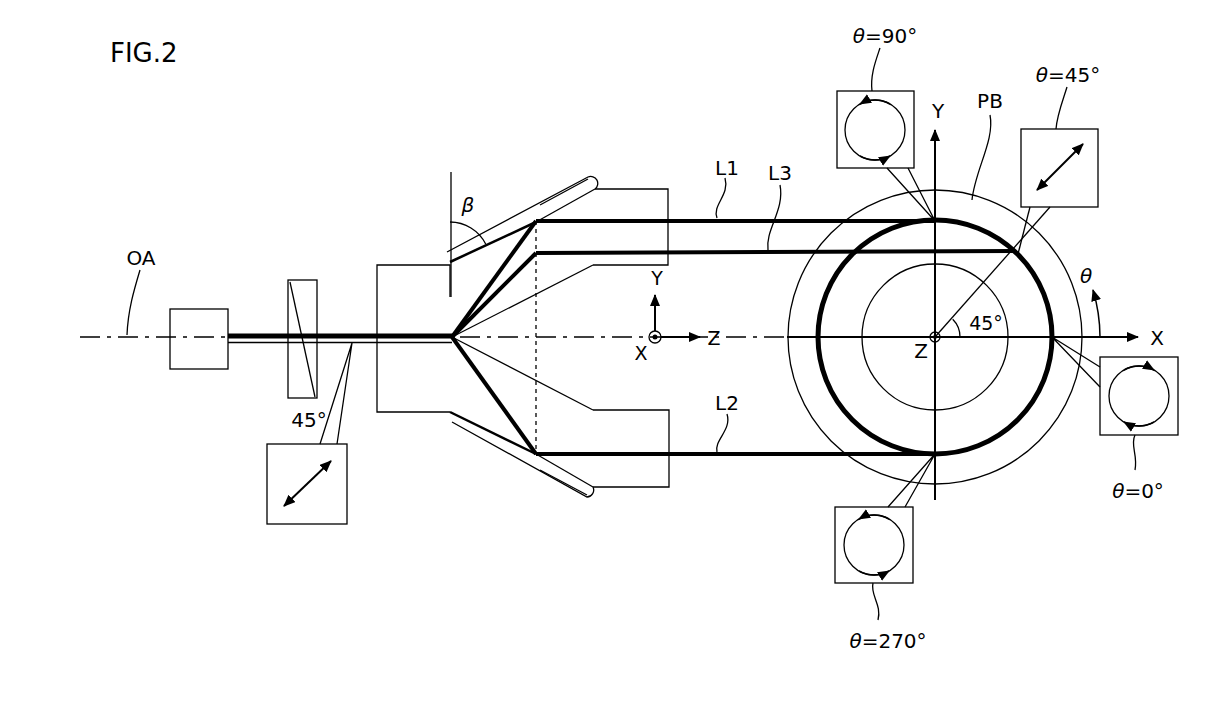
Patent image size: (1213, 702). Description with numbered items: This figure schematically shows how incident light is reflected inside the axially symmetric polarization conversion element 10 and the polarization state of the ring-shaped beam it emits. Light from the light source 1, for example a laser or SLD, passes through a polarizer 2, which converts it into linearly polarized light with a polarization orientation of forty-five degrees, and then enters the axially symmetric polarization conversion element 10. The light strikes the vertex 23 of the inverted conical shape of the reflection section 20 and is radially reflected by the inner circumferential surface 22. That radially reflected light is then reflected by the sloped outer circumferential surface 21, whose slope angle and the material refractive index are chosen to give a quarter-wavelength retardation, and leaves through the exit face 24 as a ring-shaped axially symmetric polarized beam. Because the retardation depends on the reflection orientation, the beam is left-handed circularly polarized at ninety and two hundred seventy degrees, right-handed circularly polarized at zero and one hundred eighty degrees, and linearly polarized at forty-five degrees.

The light source 1 is at (203, 308).
The polarizer 2 is at (308, 280).
The axially symmetric polarization conversion element 10 is at (427, 236).
The reflection section 20 is at (474, 244).
The outer circumferential surface 21 is at (570, 206).
The inner circumferential surface 22 is at (580, 266).
The vertex 23 is at (450, 345).
The exit face 24 is at (672, 205).